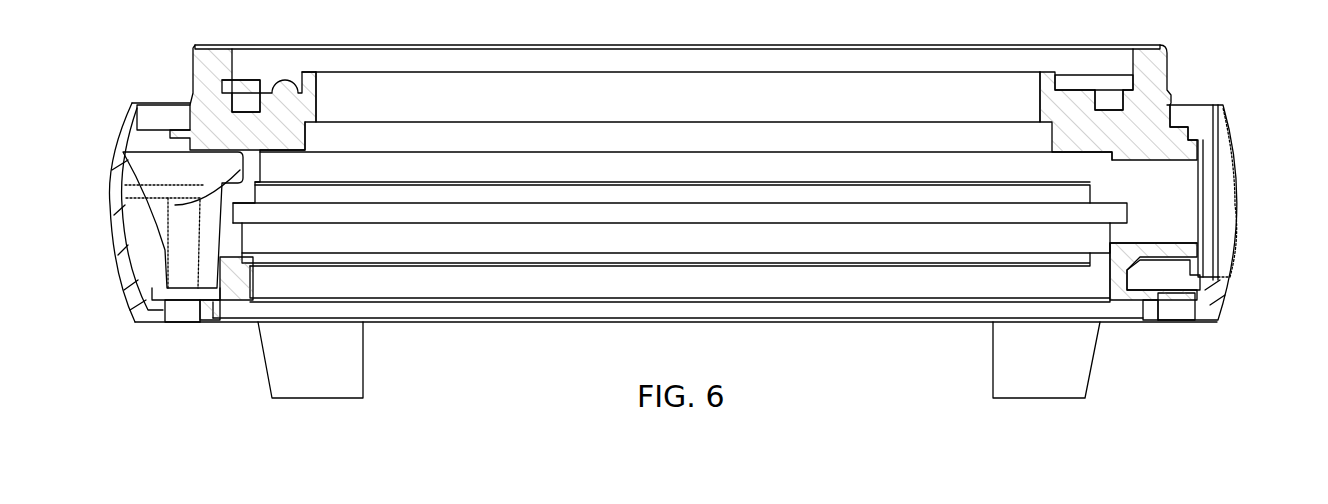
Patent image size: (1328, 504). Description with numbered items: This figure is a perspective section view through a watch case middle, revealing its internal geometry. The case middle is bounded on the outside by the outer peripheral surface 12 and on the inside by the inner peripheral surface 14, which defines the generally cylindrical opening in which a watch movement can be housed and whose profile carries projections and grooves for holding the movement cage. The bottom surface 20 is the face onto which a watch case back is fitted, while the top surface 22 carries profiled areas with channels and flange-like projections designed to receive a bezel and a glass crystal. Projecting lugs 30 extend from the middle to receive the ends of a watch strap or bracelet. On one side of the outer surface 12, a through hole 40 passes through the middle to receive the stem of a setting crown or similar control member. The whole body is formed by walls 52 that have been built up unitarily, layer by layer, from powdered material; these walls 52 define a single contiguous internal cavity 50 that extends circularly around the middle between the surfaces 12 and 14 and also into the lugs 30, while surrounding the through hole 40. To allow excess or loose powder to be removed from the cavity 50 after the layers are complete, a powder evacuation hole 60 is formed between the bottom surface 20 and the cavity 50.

The outer peripheral surface 12 is at (120, 268).
The inner peripheral surface 14 is at (253, 230).
The bottom surface 20 is at (1150, 322).
The top surface 22 is at (1078, 90).
The projecting lugs 30 is at (285, 368).
The through hole 40 is at (1160, 202).
The internal cavity 50 is at (182, 254).
The walls 52 is at (208, 96).
The powder evacuation hole 60 is at (178, 306).